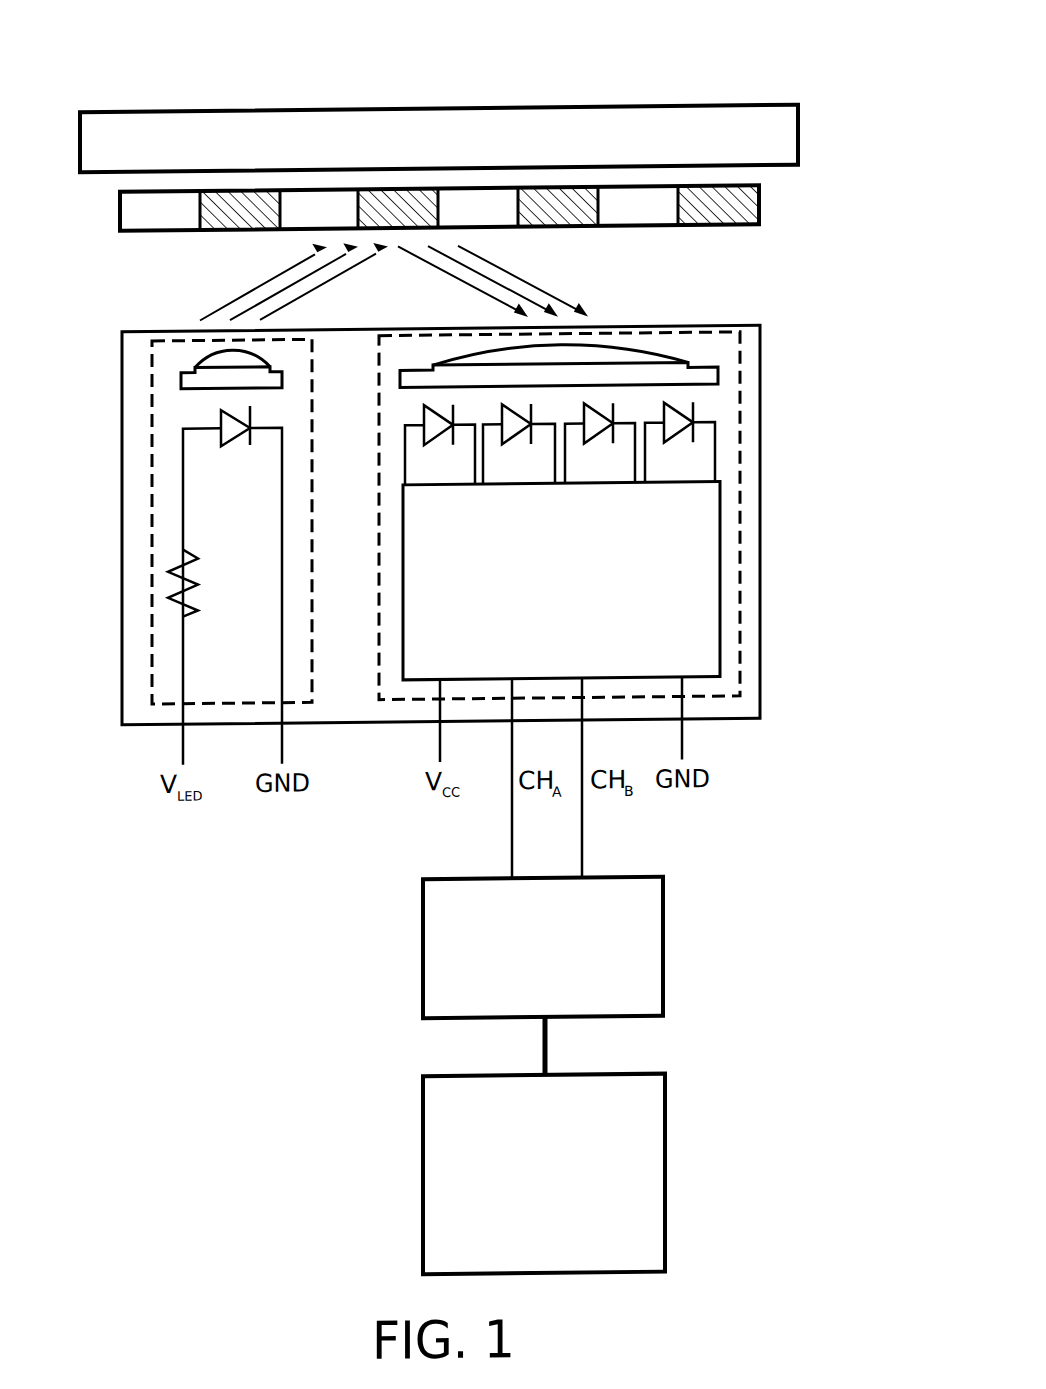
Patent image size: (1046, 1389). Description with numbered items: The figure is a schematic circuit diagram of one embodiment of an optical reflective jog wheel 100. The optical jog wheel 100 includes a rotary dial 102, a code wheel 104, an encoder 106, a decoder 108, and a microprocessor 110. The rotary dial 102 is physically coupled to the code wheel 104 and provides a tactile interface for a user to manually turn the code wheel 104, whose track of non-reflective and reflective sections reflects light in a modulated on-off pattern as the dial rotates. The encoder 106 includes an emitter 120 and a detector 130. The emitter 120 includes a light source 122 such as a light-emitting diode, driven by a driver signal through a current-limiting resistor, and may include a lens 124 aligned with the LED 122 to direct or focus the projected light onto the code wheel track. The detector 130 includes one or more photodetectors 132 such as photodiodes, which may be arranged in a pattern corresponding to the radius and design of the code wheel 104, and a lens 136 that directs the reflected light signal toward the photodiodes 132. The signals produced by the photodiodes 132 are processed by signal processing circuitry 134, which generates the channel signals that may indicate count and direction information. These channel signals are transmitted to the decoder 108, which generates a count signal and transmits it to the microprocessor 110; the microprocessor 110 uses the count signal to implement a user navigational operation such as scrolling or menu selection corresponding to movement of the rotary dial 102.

The optical jog wheel 100 is at (160, 50).
The rotary dial 102 is at (800, 149).
The code wheel 104 is at (760, 213).
The encoder 106 is at (760, 573).
The decoder 108 is at (663, 980).
The microprocessor 110 is at (665, 1197).
The emitter 120 is at (150, 427).
The light source 122 is at (236, 446).
The lens 124 is at (212, 366).
The detector 130 is at (740, 425).
The photodetectors 132 is at (438, 445).
The signal processing circuitry 134 is at (720, 635).
The lens 136 is at (633, 370).